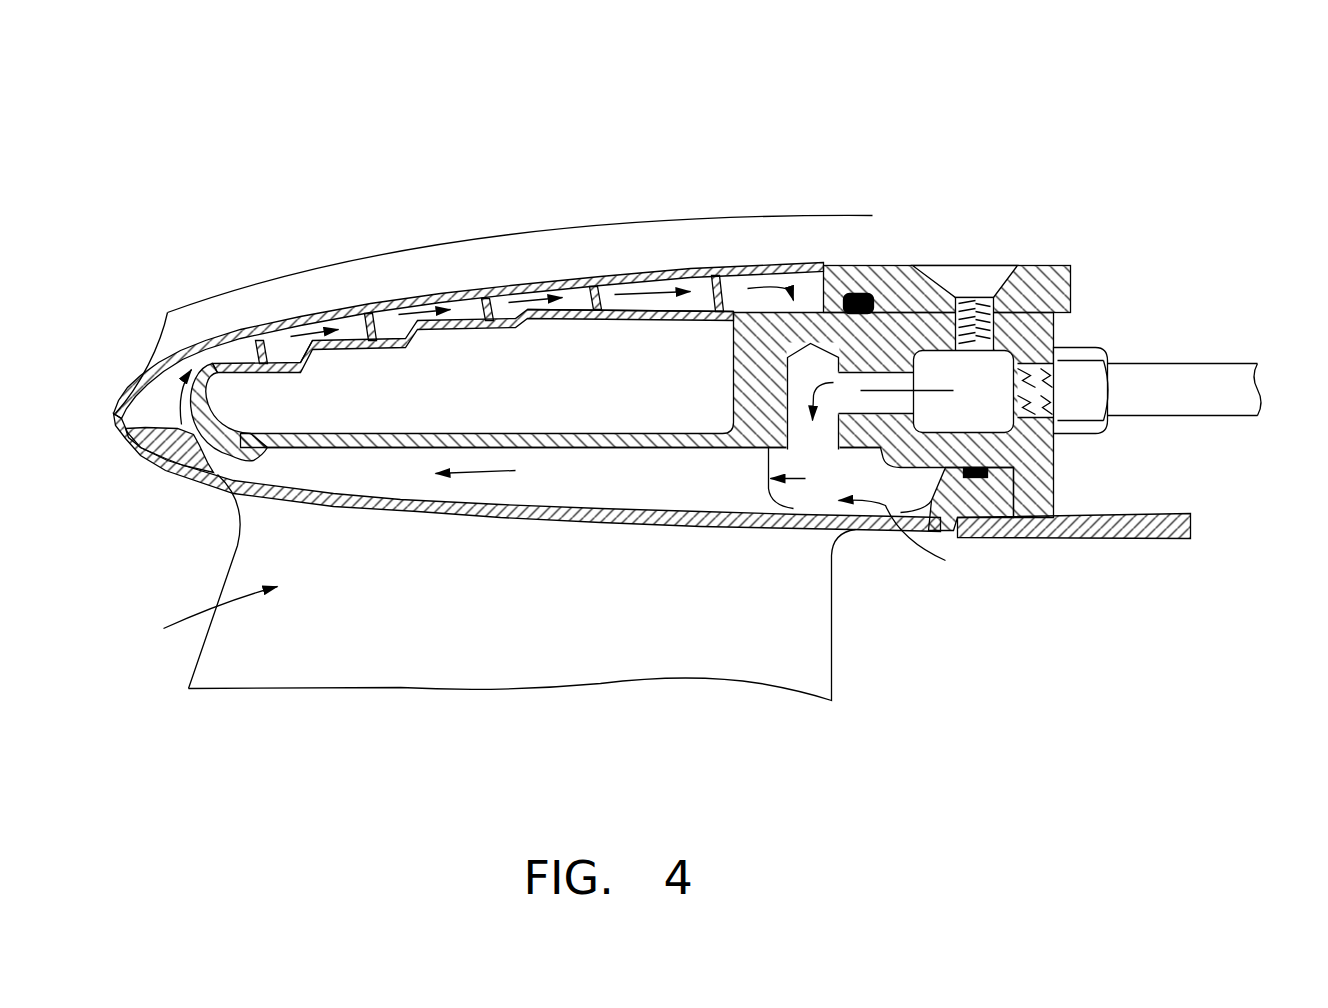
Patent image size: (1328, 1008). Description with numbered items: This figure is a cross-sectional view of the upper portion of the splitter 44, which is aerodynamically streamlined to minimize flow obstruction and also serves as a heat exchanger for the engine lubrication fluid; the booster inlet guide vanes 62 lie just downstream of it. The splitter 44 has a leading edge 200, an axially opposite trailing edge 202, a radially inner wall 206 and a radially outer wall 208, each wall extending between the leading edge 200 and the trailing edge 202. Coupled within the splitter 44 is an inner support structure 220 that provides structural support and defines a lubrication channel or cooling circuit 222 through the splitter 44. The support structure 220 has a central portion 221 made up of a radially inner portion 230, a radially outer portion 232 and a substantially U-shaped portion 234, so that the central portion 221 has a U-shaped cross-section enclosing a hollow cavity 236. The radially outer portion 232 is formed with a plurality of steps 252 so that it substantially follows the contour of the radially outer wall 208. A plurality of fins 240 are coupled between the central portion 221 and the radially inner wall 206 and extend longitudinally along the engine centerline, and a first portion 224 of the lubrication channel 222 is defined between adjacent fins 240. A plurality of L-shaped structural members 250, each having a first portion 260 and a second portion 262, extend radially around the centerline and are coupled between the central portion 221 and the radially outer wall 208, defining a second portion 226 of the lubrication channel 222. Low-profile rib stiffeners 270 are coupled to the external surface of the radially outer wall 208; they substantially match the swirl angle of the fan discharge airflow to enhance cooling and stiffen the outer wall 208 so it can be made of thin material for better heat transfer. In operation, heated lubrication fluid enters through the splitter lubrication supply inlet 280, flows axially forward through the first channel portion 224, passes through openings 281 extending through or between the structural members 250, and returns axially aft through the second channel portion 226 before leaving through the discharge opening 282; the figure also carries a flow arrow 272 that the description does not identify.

The splitter 44 is at (912, 98).
The inlet guide vanes 62 is at (486, 649).
The leading edge 200 is at (117, 413).
The trailing edge 202 is at (1117, 333).
The radially inner wall 206 is at (593, 528).
The radially outer wall 208 is at (370, 300).
The inner support structure 220 is at (220, 453).
The central portion 221 is at (660, 445).
The lubrication channel 222 is at (1015, 522).
The first portion of lubrication channel 224 is at (812, 452).
The second portion of lubrication channel 226 is at (657, 287).
The radially inner portion 230 is at (562, 446).
The radially outer portion 232 is at (628, 318).
The U-shaped portion 234 is at (213, 415).
The hollow cavity 236 is at (502, 413).
The fins 240 is at (388, 479).
The structural members 250 is at (262, 338).
The steps 252 is at (370, 345).
The first portion of structural member 260 is at (252, 340).
The second portion of structural member 262 is at (310, 352).
The rib stiffeners 270 is at (637, 258).
The airflow direction 272 is at (193, 617).
The splitter lubrication supply inlet 280 is at (980, 277).
The openings 281 is at (715, 290).
The discharge opening 282 is at (893, 262).